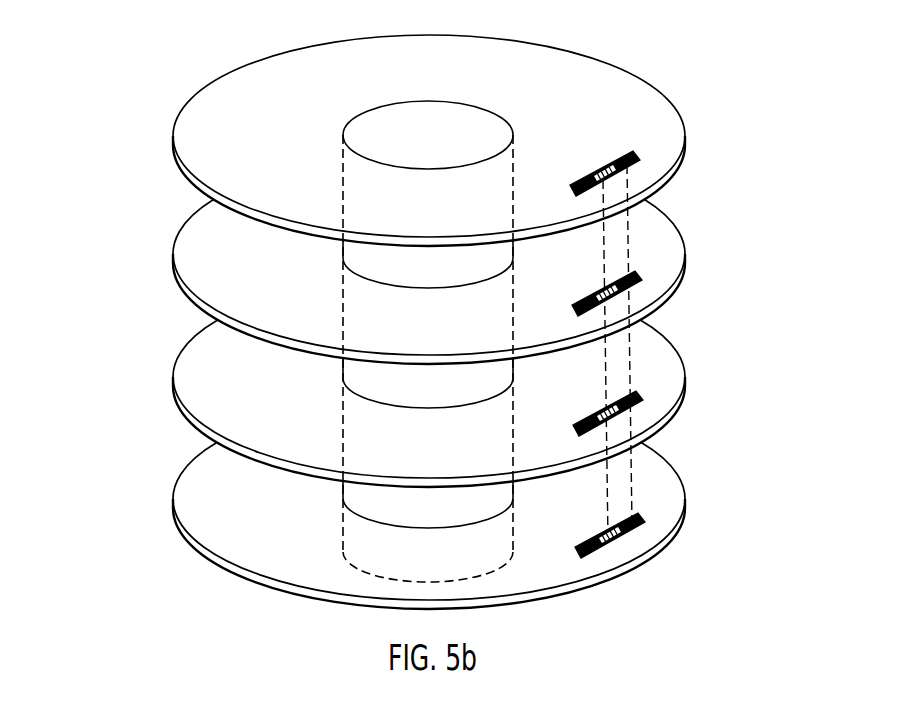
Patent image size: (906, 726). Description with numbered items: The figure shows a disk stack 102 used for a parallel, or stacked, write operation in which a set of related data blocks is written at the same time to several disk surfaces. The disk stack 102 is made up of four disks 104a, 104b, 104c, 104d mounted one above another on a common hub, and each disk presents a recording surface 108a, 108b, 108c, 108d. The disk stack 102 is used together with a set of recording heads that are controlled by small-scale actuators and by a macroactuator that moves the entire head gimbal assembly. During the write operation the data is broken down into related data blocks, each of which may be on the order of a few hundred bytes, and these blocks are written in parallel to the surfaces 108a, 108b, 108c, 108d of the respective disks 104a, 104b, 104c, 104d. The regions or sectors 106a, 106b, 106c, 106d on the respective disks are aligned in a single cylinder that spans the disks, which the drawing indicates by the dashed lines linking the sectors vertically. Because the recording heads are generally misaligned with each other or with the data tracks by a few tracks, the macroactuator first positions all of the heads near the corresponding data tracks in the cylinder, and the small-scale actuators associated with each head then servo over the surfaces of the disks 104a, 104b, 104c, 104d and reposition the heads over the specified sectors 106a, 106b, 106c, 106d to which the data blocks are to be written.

The disk stack 102 is at (405, 322).
The disk 104a is at (386, 140).
The disk 104b is at (386, 282).
The disk 104c is at (388, 403).
The disk 104d is at (388, 526).
The sector 106a is at (615, 191).
The sector 106b is at (626, 315).
The sector 106c is at (628, 435).
The sector 106d is at (623, 551).
The surface 108a is at (258, 74).
The surface 108b is at (195, 235).
The surface 108c is at (197, 362).
The surface 108d is at (200, 482).